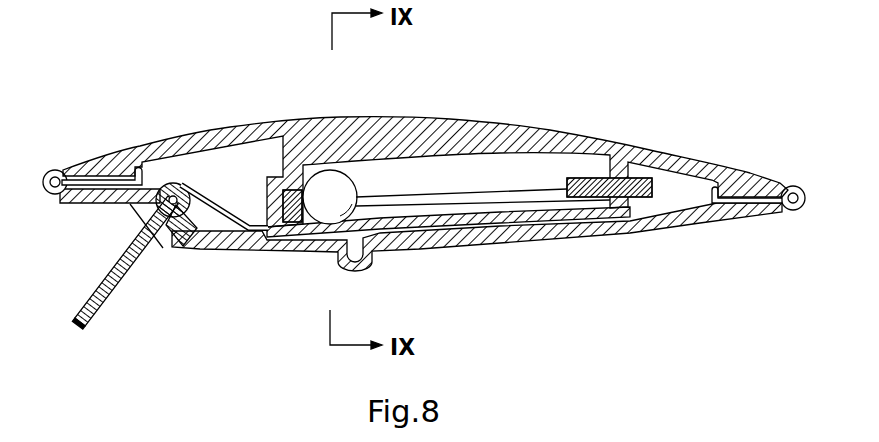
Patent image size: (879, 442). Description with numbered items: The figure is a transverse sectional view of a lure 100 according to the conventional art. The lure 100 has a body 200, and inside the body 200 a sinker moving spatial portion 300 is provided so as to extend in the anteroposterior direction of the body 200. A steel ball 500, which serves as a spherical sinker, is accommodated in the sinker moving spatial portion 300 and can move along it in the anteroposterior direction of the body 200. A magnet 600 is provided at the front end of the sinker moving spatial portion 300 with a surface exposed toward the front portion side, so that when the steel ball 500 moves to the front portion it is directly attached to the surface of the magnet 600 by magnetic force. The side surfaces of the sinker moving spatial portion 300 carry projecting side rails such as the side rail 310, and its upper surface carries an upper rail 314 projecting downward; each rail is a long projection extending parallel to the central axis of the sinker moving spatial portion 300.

The lure 100 is at (724, 315).
The body 200 is at (697, 158).
The sinker moving spatial portion 300 is at (425, 135).
The left side rail 310 is at (447, 200).
The upper rail 314 is at (483, 130).
The steel ball 500 is at (352, 178).
The magnet 600 is at (276, 236).